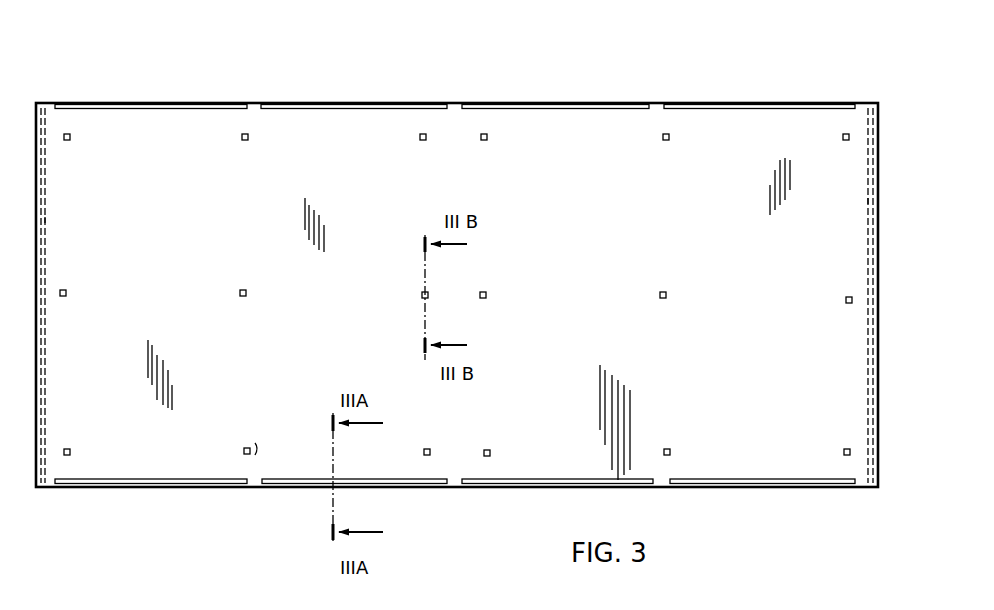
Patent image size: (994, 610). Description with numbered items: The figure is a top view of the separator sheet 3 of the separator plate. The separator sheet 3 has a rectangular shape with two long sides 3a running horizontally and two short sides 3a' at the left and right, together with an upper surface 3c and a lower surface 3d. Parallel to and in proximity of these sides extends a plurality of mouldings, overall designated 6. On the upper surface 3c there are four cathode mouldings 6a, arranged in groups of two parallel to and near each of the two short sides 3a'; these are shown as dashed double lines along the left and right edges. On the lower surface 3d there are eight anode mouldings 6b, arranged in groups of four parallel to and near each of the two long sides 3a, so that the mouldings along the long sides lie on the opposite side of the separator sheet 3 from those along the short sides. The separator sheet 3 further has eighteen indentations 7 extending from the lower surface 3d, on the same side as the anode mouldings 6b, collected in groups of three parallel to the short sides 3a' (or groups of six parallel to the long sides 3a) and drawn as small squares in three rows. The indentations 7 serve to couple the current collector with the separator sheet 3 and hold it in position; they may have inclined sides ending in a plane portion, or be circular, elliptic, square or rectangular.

The separator sheet 3 is at (578, 254).
The long sides 3a is at (455, 273).
The short sides 3a' is at (456, 295).
The upper surface 3c is at (260, 451).
The lower surface 3d is at (740, 456).
The mouldings 6 is at (392, 118).
The cathode mouldings 6a is at (45, 218).
The anode mouldings 6b is at (208, 107).
The indentations 7 is at (243, 297).